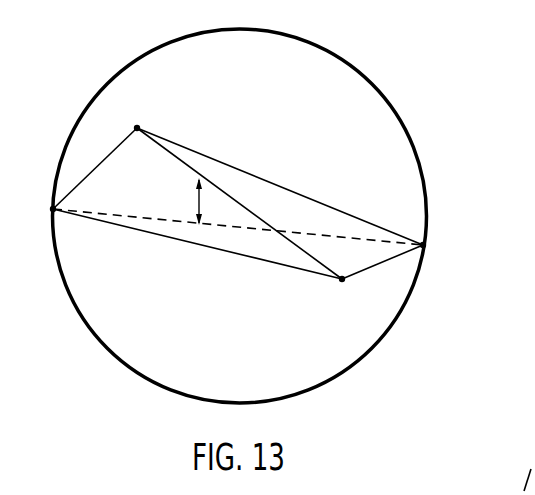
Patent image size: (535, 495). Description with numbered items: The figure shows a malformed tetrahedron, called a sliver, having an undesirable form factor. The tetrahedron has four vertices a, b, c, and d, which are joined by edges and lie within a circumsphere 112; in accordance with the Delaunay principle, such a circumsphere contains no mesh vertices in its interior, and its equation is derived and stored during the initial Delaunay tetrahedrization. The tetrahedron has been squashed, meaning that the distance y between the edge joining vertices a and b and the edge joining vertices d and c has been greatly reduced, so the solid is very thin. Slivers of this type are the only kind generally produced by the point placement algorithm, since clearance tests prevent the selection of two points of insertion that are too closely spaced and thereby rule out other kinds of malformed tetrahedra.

The circumsphere 112 is at (381, 94).
The vertex a is at (136, 114).
The vertex b is at (348, 292).
The vertex c is at (434, 242).
The vertex d is at (46, 202).
The distance Y y is at (192, 201).